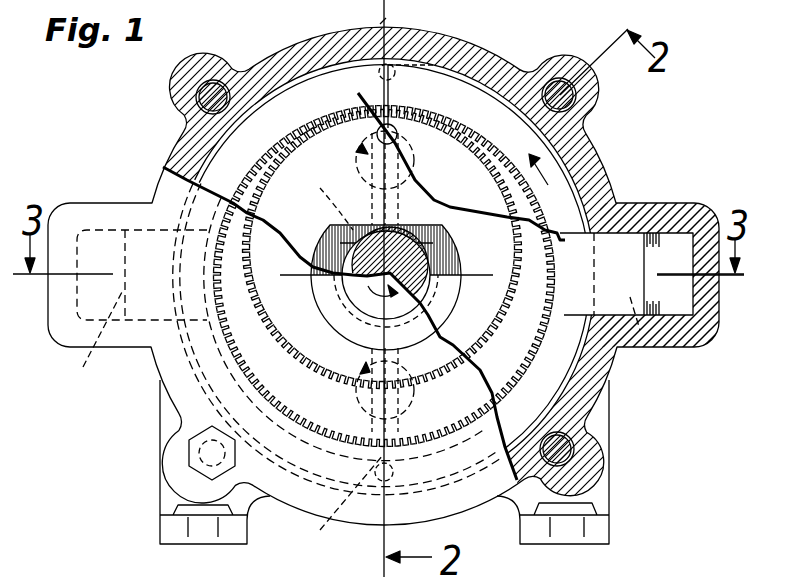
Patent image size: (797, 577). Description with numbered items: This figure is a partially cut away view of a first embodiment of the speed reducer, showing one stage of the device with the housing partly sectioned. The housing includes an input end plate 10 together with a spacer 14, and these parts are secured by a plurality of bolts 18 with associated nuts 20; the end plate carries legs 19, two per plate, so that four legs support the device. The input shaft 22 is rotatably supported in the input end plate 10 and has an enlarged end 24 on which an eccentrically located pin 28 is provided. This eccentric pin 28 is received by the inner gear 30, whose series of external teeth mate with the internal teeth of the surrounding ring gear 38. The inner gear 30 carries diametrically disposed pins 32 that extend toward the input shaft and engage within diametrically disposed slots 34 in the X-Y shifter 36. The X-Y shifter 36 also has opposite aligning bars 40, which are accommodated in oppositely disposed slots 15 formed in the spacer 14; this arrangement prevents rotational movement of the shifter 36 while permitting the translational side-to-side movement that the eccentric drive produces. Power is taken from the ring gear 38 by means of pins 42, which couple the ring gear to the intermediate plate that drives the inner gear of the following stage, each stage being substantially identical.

The input end plate 10 is at (168, 378).
The spacer 14 is at (608, 170).
The slots 15 is at (118, 225).
The bolts 18 is at (208, 85).
The legs 19 is at (173, 533).
The nuts 20 is at (384, 342).
The input shaft 22 is at (376, 280).
The enlarged end 24 is at (355, 228).
The eccentrically located pin 28 is at (328, 192).
The inner gear 30 is at (484, 173).
The pins 32 is at (400, 128).
The slots 34 is at (358, 147).
The X-Y shifter 36 is at (612, 352).
The ring gear 38 is at (366, 80).
The aligning bars 40 is at (86, 363).
The pins 42 is at (349, 288).